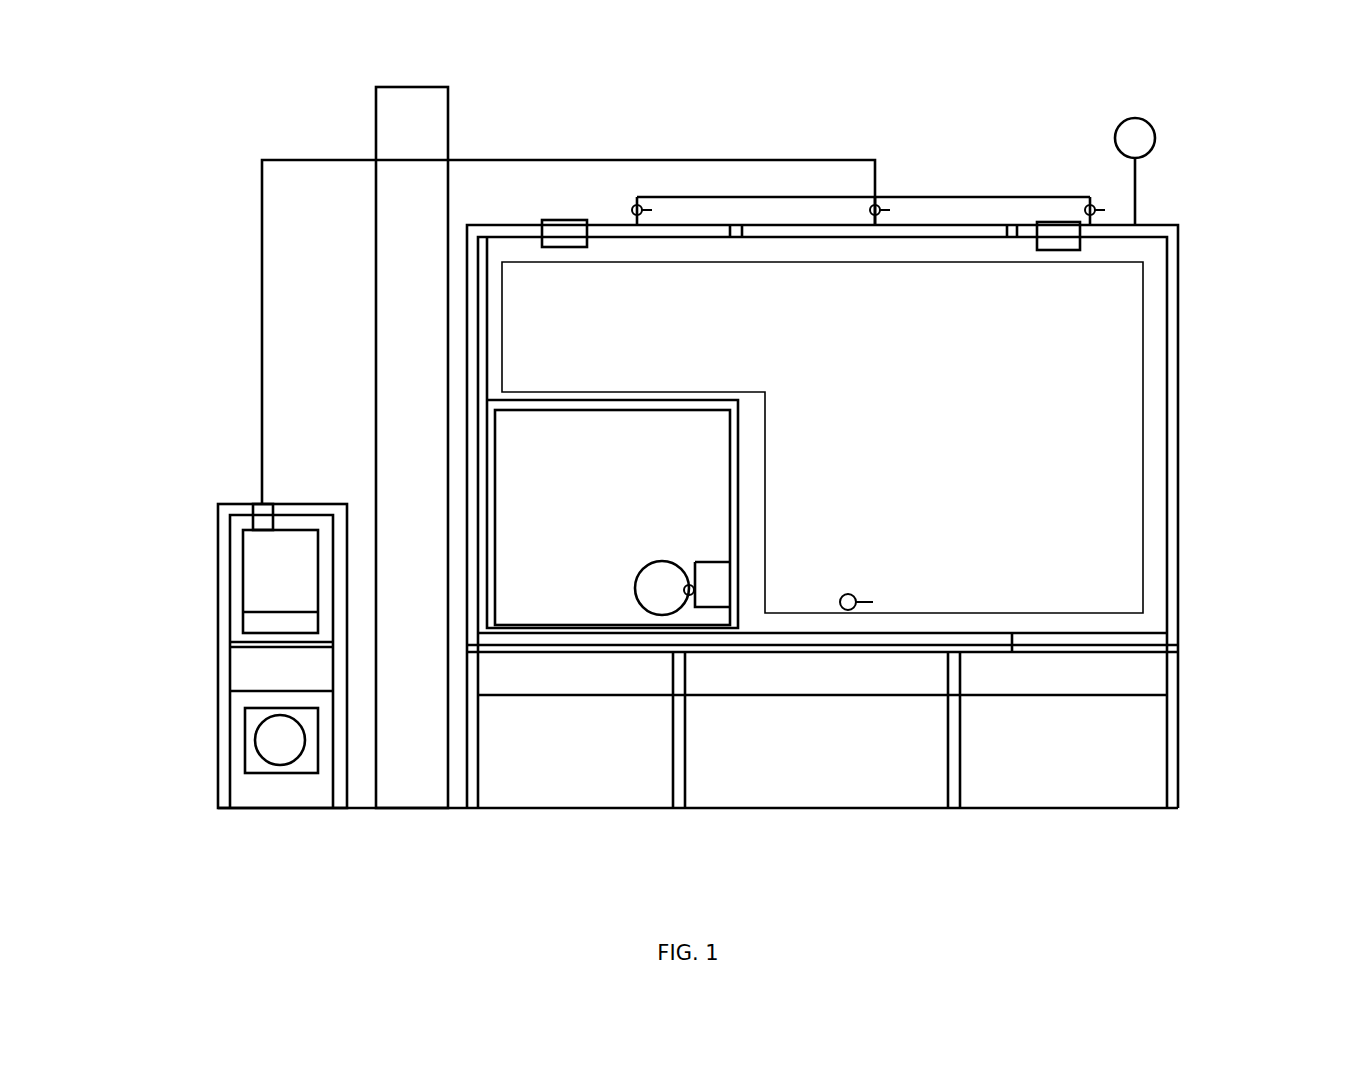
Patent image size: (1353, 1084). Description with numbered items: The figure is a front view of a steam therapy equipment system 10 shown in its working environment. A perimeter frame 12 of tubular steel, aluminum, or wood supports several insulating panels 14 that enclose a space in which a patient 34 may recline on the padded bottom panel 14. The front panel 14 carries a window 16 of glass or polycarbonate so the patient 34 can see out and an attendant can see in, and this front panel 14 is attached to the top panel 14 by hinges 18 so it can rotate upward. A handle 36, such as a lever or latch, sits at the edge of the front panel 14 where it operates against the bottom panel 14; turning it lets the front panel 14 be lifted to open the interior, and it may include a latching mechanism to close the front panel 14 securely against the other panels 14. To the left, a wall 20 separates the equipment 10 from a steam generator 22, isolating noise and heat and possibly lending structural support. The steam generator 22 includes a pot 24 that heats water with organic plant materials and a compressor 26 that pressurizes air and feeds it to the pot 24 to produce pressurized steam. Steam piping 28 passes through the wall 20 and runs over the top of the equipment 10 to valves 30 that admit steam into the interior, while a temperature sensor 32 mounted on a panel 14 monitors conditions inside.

The therapy equipment 10 is at (232, 155).
The perimeter frame 12 is at (1178, 750).
The panel 14 is at (1167, 427).
The window 16 is at (573, 615).
The hinge 18 is at (572, 222).
The wall 20 is at (451, 130).
The steam generator 22 is at (198, 778).
The pot 24 is at (233, 575).
The compressor 26 is at (233, 738).
The steam pipe 28 is at (262, 252).
The valve 30 is at (1087, 210).
The temperature sensor 32 is at (1153, 127).
The patient 34 is at (682, 602).
The handle 36 is at (853, 617).